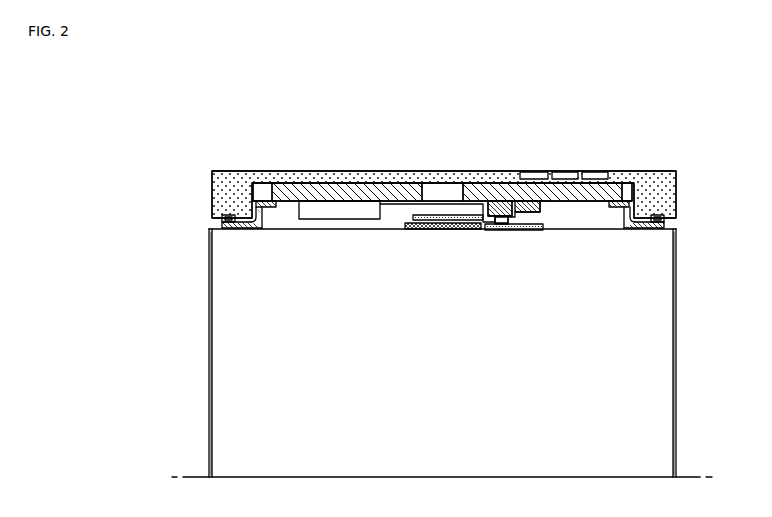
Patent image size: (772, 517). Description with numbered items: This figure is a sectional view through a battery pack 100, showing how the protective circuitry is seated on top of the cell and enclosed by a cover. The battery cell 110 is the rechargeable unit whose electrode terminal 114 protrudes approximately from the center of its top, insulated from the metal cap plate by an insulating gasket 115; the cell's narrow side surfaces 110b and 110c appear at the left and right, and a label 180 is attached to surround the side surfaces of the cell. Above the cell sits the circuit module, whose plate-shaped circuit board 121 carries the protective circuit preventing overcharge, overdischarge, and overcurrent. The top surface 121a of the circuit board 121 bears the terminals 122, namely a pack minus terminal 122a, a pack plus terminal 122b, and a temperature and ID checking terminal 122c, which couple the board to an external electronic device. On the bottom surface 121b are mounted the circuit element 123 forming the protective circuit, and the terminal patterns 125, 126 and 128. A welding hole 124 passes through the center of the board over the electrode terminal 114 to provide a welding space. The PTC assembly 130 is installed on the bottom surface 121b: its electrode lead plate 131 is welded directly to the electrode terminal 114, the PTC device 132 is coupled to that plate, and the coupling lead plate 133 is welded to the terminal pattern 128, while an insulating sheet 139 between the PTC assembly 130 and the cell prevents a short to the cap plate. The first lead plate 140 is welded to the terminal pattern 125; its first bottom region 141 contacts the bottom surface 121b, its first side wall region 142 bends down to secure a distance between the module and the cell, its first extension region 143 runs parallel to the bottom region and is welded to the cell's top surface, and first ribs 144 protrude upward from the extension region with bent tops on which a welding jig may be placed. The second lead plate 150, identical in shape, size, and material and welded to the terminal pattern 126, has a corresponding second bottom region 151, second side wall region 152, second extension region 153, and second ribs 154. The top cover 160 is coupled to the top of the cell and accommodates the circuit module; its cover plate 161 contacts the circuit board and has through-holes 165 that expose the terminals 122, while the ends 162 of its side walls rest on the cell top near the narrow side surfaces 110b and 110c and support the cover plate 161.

The battery pack 100 is at (160, 99).
The battery cell 110 is at (443, 353).
The narrow side surface 110b is at (207, 343).
The narrow side surface 110c is at (676, 372).
The electrode terminal 114 is at (441, 230).
The insulating gasket 115 is at (420, 221).
The circuit board 121 is at (466, 170).
The top surface of circuit board 121a is at (377, 186).
The bottom surface of circuit board 121b is at (410, 206).
The terminals 122 is at (569, 139).
The pack minus terminal 122a is at (540, 172).
The pack plus terminal 122b is at (595, 172).
The temperature and ID checking terminal 122c is at (571, 172).
The circuit element 123 is at (338, 212).
The welding hole 124 is at (458, 183).
The terminal pattern 125 is at (627, 188).
The terminal pattern 126 is at (271, 190).
The terminal pattern 128 is at (504, 201).
The PTC assembly 130 is at (510, 260).
The electrode lead plate 131 is at (481, 232).
The PTC device 132 is at (495, 233).
The coupling lead plate 133 is at (514, 232).
The insulating sheet 139 is at (553, 251).
The first lead plate 140 is at (655, 237).
The first bottom region 141 is at (616, 208).
The first side wall region 142 is at (622, 232).
The first extension region 143 is at (653, 231).
The first ribs 144 is at (657, 220).
The second lead plate 150 is at (221, 220).
The second bottom region 151 is at (261, 200).
The second side wall region 152 is at (265, 222).
The second extension region 153 is at (231, 230).
The second ribs 154 is at (226, 219).
The top cover 160 is at (444, 159).
The cover plate 161 is at (298, 178).
The ends 162 is at (230, 196).
The through-holes 165 is at (527, 170).
The label 180 is at (683, 304).